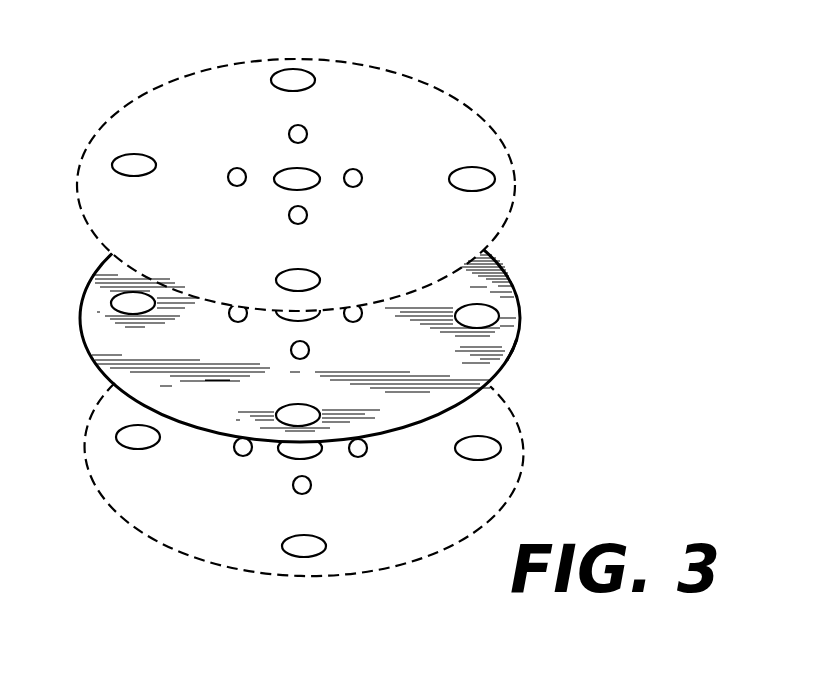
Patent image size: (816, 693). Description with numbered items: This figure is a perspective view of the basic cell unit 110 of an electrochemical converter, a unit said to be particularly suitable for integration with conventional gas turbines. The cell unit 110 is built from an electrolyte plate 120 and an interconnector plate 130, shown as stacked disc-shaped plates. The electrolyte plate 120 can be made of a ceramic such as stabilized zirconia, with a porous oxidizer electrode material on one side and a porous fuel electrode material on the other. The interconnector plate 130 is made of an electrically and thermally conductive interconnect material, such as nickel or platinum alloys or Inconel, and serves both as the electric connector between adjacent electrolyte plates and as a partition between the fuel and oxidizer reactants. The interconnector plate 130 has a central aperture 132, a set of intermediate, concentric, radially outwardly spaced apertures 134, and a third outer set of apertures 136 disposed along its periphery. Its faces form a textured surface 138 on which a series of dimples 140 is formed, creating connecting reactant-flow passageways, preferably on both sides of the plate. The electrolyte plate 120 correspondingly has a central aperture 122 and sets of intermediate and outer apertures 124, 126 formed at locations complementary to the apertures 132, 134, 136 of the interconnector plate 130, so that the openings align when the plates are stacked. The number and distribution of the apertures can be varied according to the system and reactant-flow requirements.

The basic cell unit 110 is at (557, 82).
The electrolyte plate 120 is at (486, 119).
The central aperture 122 is at (300, 170).
The intermediate apertures 124 is at (229, 172).
The outer apertures 126 is at (295, 70).
The interconnector plate 130 is at (507, 266).
The central aperture 132 is at (288, 318).
The intermediate apertures 134 is at (309, 350).
The outer apertures 136 is at (100, 262).
The textured surface 138 is at (472, 358).
The dimples 140 is at (498, 347).